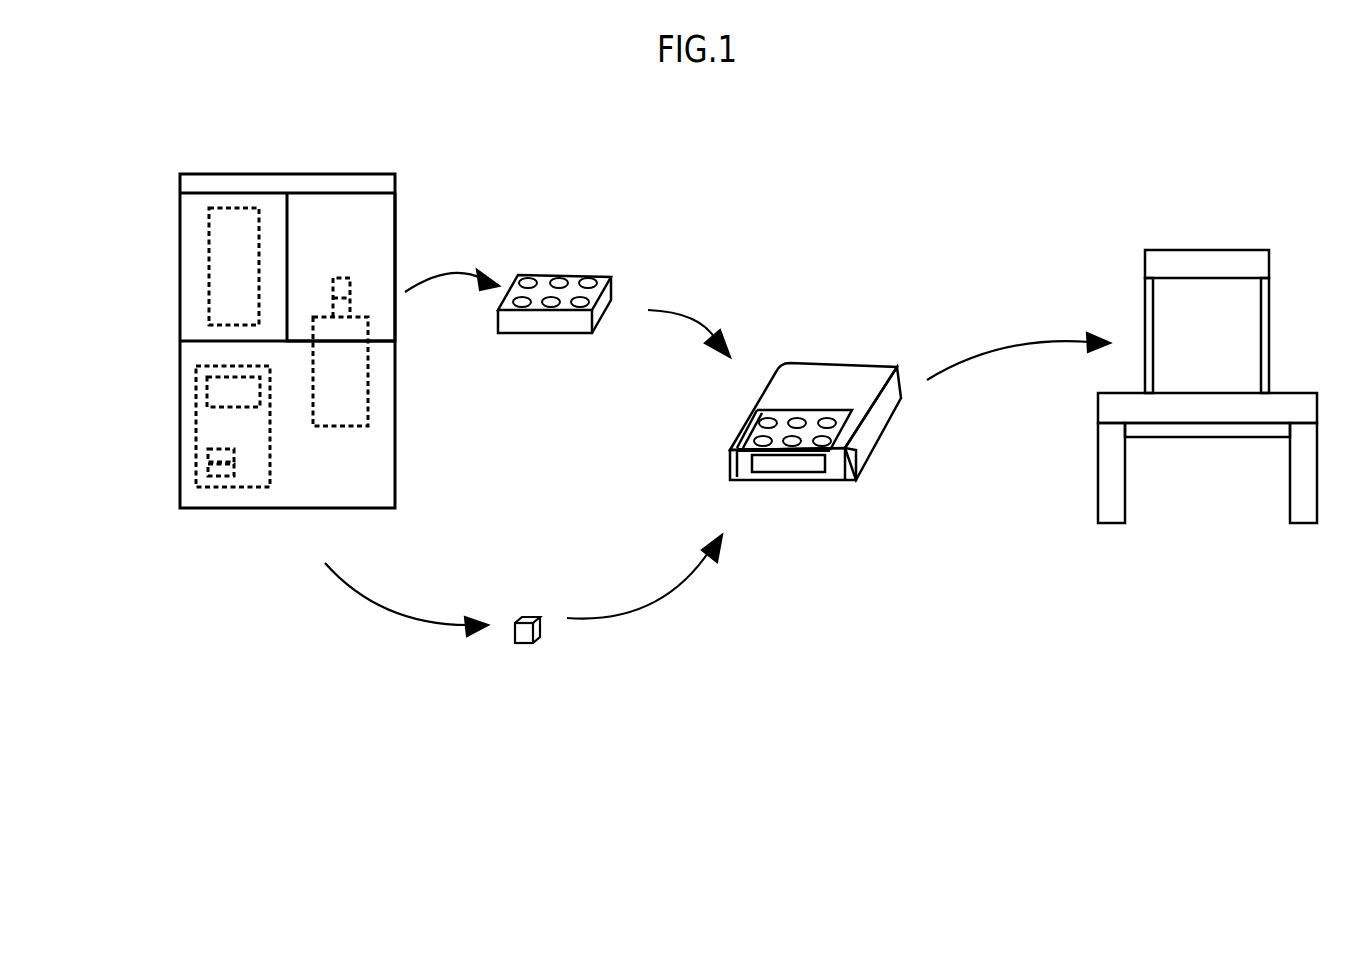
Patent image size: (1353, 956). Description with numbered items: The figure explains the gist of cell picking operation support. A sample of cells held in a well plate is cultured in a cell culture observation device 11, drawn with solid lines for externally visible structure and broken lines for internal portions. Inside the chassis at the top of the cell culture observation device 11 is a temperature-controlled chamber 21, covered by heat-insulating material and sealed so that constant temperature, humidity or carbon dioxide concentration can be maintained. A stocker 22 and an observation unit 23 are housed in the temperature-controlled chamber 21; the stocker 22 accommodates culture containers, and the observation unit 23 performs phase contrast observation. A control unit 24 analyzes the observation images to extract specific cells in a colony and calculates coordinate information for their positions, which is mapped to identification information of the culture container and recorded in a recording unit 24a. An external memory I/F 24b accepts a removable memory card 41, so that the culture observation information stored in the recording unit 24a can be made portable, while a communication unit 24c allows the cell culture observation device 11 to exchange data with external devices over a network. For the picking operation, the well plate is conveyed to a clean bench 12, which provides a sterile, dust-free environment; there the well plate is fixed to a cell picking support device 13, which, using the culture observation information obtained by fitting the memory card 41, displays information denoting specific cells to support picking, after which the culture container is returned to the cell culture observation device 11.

The cell culture observation device 11 is at (280, 508).
The clean bench 12 is at (1208, 255).
The cell picking support device 13 is at (838, 378).
The temperature-controlled chamber 21 is at (343, 210).
The stocker 22 is at (233, 207).
The observation unit 23 is at (367, 317).
The control unit 24 is at (196, 428).
The recording unit 24a is at (207, 391).
The external memory I/F 24b is at (208, 455).
The communication unit 24c is at (208, 470).
The memory card 41 is at (527, 645).